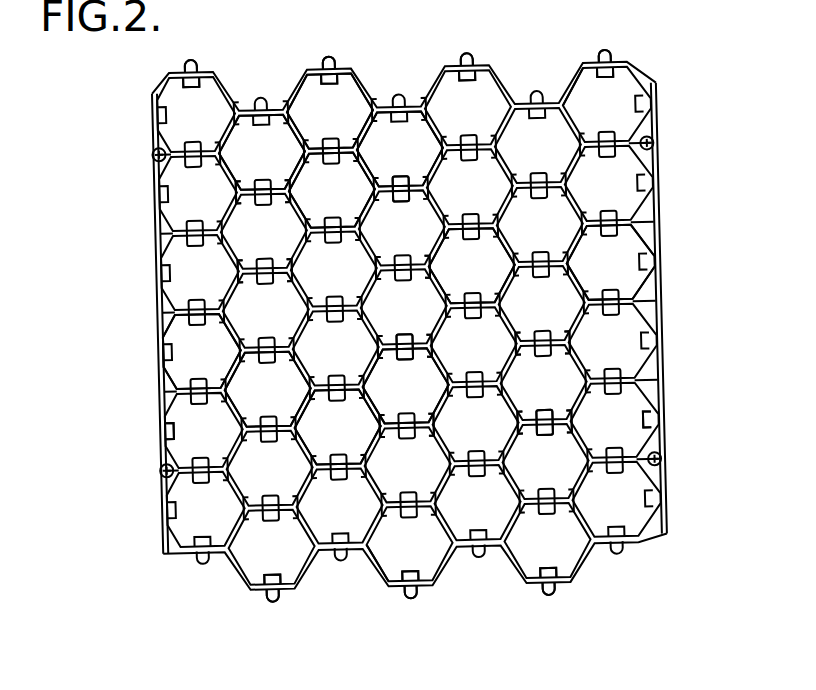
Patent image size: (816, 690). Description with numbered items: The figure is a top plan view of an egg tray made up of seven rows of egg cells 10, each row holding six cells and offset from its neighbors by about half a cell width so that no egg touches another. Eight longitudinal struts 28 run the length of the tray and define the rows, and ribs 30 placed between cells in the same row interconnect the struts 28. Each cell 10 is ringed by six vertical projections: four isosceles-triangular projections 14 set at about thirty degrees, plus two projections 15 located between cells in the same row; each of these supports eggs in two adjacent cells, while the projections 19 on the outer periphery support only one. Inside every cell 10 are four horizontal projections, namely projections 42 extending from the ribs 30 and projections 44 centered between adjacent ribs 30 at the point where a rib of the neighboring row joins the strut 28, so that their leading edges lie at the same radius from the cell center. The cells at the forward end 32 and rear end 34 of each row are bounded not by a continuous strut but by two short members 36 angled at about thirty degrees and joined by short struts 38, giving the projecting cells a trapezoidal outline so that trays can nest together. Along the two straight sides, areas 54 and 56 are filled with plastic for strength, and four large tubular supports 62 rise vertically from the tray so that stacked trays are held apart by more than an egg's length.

The egg cell 10 is at (344, 90).
The vertical projection 14 is at (363, 216).
The vertical projection 15 is at (401, 196).
The outer periphery projection 19 is at (661, 421).
The longitudinal strut 28 is at (661, 271).
The rib 30 is at (417, 185).
The forward end 32 is at (420, 74).
The rear end 34 is at (494, 594).
The short member 36 is at (558, 72).
The short strut 38 is at (485, 65).
The horizontal projection 42 is at (405, 337).
The horizontal projection 44 is at (347, 108).
The side area 54 is at (658, 213).
The side area 56 is at (160, 234).
The tubular support 62 is at (657, 143).